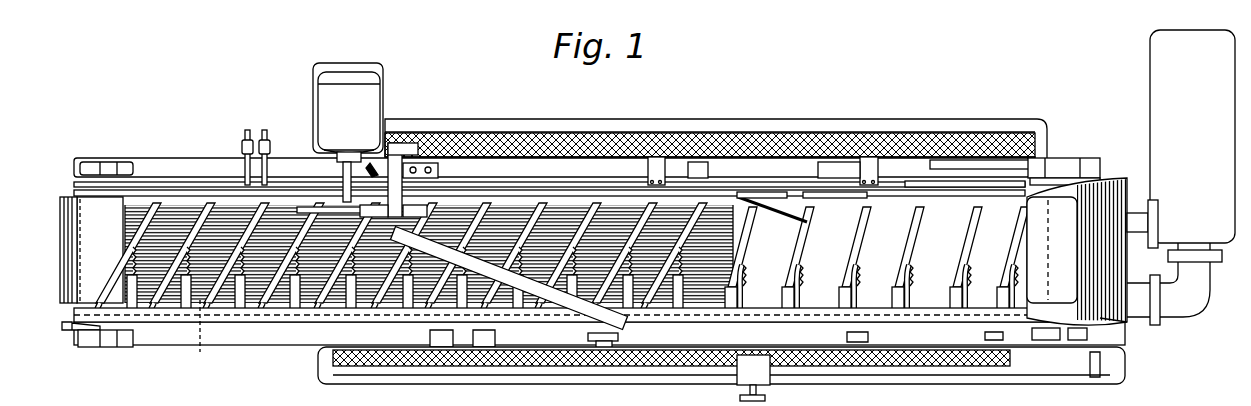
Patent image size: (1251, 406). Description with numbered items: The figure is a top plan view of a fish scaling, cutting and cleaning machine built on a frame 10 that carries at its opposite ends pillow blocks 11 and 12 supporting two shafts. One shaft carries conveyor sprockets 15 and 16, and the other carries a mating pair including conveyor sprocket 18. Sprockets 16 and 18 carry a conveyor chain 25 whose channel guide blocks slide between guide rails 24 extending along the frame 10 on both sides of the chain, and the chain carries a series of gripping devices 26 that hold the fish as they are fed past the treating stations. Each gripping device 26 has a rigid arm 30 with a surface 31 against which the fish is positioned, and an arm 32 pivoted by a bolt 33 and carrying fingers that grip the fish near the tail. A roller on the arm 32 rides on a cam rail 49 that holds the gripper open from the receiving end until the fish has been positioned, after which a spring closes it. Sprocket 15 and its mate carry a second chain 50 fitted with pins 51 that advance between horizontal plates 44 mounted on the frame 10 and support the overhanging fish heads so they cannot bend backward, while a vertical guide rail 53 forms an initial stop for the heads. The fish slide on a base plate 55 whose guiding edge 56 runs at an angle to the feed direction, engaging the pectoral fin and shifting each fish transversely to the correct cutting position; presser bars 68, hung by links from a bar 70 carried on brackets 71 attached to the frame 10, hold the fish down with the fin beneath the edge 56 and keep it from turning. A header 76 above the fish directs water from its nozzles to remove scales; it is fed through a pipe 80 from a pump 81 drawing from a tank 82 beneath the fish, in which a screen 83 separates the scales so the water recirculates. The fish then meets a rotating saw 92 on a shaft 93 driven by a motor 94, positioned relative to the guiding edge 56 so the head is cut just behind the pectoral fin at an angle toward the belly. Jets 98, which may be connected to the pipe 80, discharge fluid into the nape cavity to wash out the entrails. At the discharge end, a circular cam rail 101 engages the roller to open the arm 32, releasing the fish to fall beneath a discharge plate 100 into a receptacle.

The frame 10 is at (180, 160).
The pillow block 11 is at (1060, 165).
The pillow block 12 is at (100, 165).
The conveyor sprocket 15 is at (1100, 180).
The conveyor sprocket 16 is at (1127, 330).
The conveyor sprocket 18 is at (74, 318).
The guide rails 24 is at (253, 326).
The conveyor chain 25 is at (190, 333).
The gripping device 26 is at (886, 267).
The rigid arm 30 is at (980, 228).
The surface 31 is at (959, 267).
The arm 32 is at (953, 282).
The bolt 33 is at (810, 315).
The horizontal plates 44 is at (74, 191).
The cam rail 49 is at (700, 345).
The chain 50 is at (1072, 176).
The pins 51 is at (975, 188).
The vertical guide rail 53 is at (975, 163).
The base plate 55 is at (870, 247).
The guiding edge 56 is at (790, 213).
The presser bars 68 is at (828, 197).
The bar 70 is at (780, 190).
The brackets 71 is at (656, 163).
The header 76 is at (533, 292).
The pipe 80 is at (590, 372).
The pump 81 is at (1181, 177).
The tank 82 is at (867, 378).
The screen 83 is at (795, 126).
The rotating saw 92 is at (320, 205).
The shaft 93 is at (347, 170).
The motor 94 is at (383, 98).
The jets 98 is at (264, 133).
The discharge plate 100 is at (62, 253).
The circular cam rail 101 is at (68, 331).